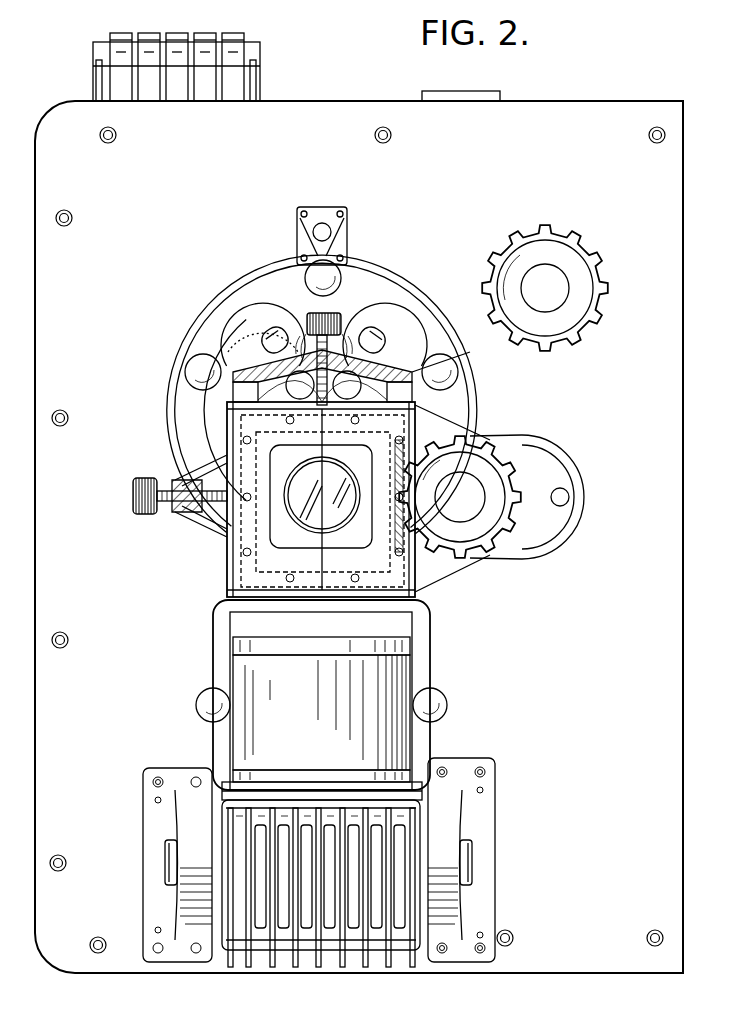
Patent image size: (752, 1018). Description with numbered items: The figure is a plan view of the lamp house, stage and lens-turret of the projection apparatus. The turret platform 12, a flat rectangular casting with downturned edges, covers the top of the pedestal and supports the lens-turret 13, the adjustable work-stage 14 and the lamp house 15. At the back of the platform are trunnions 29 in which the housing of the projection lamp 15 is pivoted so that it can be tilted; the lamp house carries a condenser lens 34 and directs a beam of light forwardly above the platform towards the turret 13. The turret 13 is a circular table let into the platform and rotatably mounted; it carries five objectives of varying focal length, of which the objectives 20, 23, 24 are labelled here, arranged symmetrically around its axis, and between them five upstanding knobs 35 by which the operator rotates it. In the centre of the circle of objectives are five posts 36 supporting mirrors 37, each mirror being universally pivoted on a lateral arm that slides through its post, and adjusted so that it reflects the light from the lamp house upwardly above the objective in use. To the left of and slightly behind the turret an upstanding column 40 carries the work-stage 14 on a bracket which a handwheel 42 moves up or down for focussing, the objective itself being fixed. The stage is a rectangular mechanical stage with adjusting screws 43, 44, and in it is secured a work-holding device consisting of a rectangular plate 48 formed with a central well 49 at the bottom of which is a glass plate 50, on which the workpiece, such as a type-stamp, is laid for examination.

The turret platform 12 is at (597, 950).
The lens-turret 13 is at (448, 398).
The work-stage 14 is at (430, 572).
The lamp house 15 is at (318, 947).
The objective 20 is at (208, 441).
The objective 23 is at (378, 305).
The objective 24 is at (263, 318).
The trunnions 29 is at (178, 883).
The condenser lens 34 is at (410, 683).
The upstanding knobs 35 is at (200, 372).
The posts 36 is at (300, 385).
The mirrors 37 is at (262, 348).
The column 40 is at (555, 477).
The handwheel 42 is at (475, 552).
The adjusting screw 43 is at (318, 312).
The adjusting screw 44 is at (140, 500).
The rectangular plate 48 is at (297, 537).
The central well 49 is at (287, 498).
The glass plate 50 is at (312, 498).